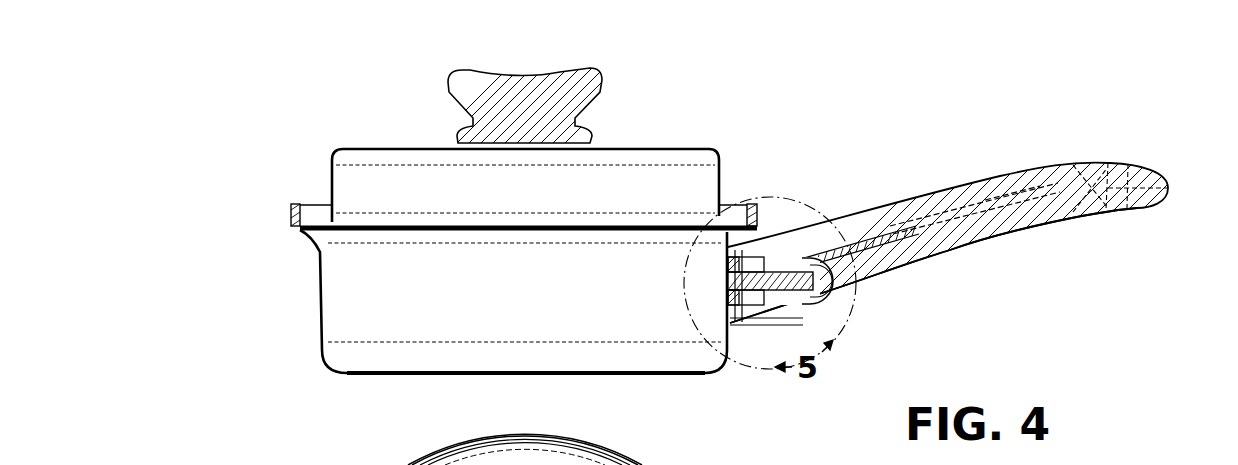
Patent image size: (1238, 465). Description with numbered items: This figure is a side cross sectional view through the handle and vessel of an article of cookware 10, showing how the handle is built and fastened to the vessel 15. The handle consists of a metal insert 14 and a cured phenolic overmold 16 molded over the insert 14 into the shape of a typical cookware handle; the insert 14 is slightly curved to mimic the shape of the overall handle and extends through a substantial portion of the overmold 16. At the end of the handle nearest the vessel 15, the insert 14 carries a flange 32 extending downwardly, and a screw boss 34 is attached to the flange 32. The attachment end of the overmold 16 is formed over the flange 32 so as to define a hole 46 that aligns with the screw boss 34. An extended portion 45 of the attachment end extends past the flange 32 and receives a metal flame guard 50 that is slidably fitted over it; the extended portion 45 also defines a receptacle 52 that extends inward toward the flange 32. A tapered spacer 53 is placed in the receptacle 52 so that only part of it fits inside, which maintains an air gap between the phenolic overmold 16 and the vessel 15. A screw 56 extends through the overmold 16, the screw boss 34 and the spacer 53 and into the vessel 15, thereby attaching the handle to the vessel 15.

The article of cookware 10 is at (840, 132).
The metal insert 14 is at (1000, 205).
The vessel 15 is at (345, 293).
The cured phenolic overmold 16 is at (962, 246).
The flange 32 is at (822, 228).
The screw boss 34 is at (812, 318).
The extended portion 45 is at (790, 240).
The hole 46 is at (793, 322).
The metal flame guard 50 is at (737, 313).
The receptacle 52 is at (750, 313).
The spacer 53 is at (733, 337).
The screw 56 is at (782, 262).